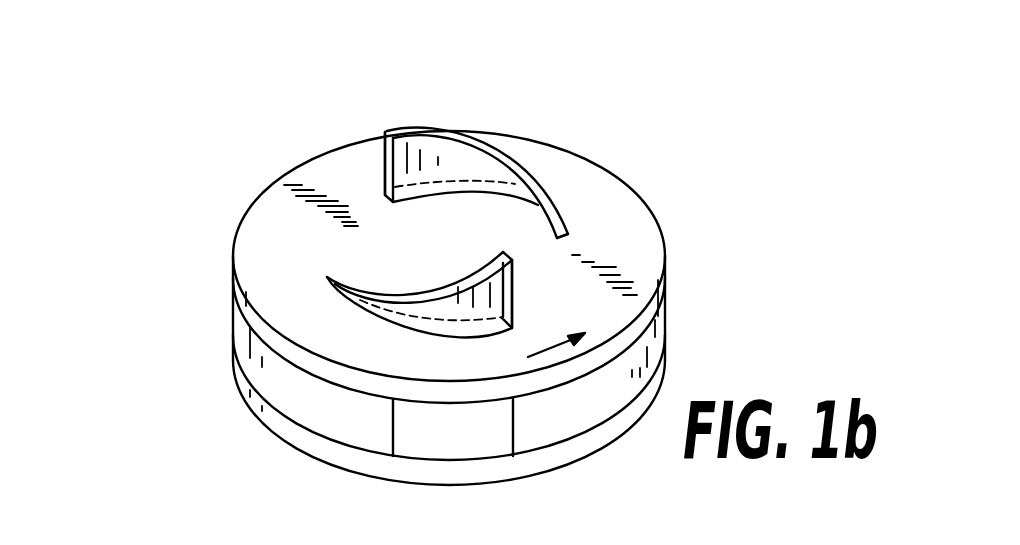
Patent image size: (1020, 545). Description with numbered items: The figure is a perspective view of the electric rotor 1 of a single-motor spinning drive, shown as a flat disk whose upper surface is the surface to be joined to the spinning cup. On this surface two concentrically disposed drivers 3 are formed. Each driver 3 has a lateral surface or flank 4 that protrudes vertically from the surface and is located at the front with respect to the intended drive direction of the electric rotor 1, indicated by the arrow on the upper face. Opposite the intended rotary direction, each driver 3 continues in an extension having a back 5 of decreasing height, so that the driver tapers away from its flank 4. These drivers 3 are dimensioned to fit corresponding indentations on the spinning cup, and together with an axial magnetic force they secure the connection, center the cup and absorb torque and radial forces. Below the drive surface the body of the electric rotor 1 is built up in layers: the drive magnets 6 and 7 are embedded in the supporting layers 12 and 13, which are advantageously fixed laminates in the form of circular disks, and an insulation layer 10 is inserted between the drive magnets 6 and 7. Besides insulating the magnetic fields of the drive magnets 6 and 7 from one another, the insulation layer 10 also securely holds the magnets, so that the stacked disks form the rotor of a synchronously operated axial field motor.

The electric rotor 1 is at (680, 303).
The driver 3 is at (444, 170).
The flank 4 is at (386, 131).
The back 5 is at (510, 178).
The drive magnet 6 is at (595, 413).
The drive magnet 7 is at (305, 410).
The insulation layer 10 is at (432, 445).
The supporting layer 12 is at (480, 477).
The supporting layer 13 is at (258, 323).